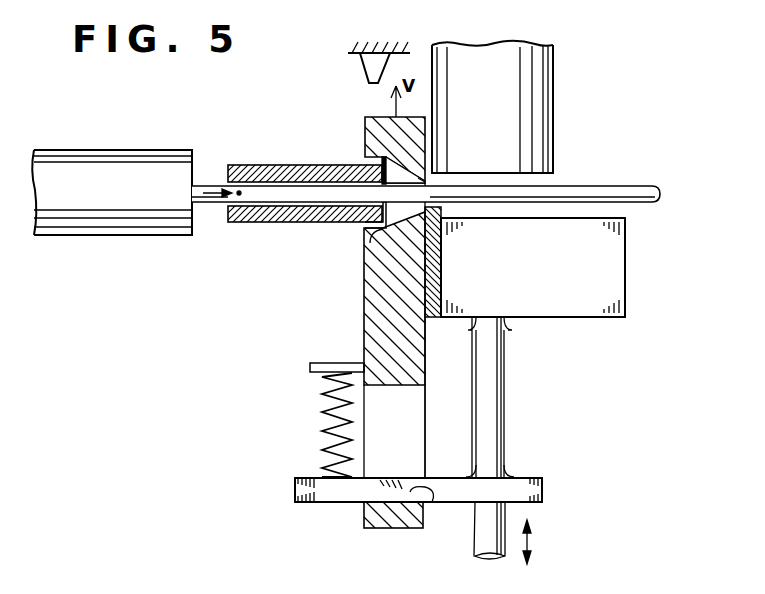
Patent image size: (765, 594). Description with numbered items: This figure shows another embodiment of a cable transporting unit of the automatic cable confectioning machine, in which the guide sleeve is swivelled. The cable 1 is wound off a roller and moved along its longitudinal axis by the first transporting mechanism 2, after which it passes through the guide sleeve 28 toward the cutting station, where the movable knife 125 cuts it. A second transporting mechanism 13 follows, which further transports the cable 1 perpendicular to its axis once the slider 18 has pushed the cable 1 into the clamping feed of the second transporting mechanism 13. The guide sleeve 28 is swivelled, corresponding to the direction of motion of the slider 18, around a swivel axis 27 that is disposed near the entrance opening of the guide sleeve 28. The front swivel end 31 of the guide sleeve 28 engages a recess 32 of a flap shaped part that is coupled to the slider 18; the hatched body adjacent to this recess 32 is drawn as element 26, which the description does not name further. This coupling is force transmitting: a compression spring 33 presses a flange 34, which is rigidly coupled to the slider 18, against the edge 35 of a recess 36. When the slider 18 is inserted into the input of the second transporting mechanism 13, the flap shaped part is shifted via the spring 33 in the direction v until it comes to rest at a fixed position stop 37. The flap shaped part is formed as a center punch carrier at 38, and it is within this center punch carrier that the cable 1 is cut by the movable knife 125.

The cable 1 is at (199, 202).
The first transporting mechanism 2 is at (88, 235).
The second transporting mechanism 13 is at (500, 88).
The slider 18 is at (602, 267).
The knife holder block 26 is at (388, 292).
The swivel axis 27 is at (218, 184).
The guide sleeve 28 is at (287, 164).
The front swivel end 31 is at (368, 163).
The recess 32 is at (370, 242).
The compression spring 33 is at (328, 402).
The flange 34 is at (295, 484).
The edge 35 is at (432, 500).
The recess 36 is at (395, 465).
The fixed position stop 37 is at (366, 63).
The center punch carrier 38 is at (439, 176).
The movable knife 125 is at (442, 273).